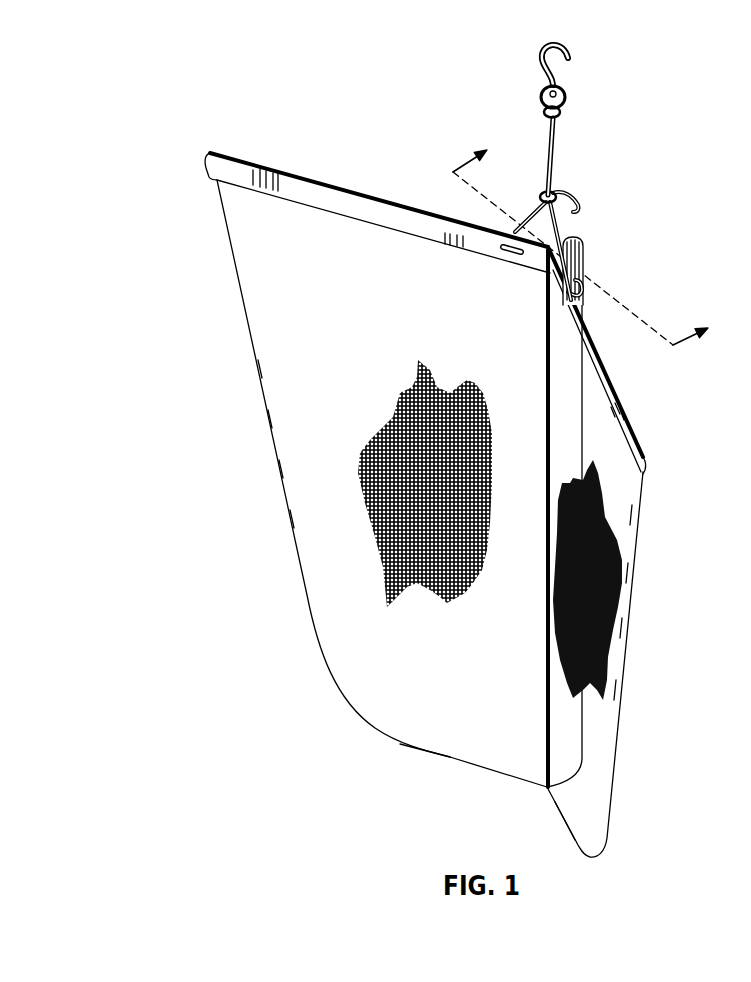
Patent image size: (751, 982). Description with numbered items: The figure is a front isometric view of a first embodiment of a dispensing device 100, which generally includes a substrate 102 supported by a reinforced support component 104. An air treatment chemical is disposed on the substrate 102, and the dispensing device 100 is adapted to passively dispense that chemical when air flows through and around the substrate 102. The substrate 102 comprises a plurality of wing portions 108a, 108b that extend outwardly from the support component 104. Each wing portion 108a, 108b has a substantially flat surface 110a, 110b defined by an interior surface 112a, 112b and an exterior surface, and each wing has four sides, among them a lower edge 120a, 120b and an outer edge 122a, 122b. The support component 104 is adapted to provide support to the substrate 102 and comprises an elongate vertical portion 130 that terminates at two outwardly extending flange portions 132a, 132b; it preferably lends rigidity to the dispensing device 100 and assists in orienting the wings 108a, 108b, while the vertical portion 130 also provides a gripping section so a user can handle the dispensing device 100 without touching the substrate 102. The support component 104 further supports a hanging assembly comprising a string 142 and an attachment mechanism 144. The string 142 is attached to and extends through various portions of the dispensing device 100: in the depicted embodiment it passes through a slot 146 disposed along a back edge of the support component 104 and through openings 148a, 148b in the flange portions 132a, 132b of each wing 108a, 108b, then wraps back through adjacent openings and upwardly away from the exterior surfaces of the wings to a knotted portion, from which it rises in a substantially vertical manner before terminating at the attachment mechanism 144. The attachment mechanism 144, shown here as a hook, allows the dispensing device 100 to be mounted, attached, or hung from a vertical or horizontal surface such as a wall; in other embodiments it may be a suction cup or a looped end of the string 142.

The dispensing device 100 is at (222, 94).
The substrate 102 is at (243, 228).
The support component 104 is at (376, 208).
The wing portion 108a is at (628, 512).
The wing portion 108b is at (272, 350).
The substantially flat surface 110a is at (627, 572).
The substantially flat surface 110b is at (282, 400).
The interior surface 112a is at (620, 626).
The interior surface 112b is at (288, 450).
The lower edge 120a is at (563, 820).
The lower edge 120b is at (428, 752).
The outer edge 122a is at (620, 690).
The outer edge 122b is at (290, 508).
The elongate vertical portion 130 is at (584, 245).
The flange portion 132a is at (633, 435).
The flange portion 132b is at (298, 185).
The string 142 is at (557, 152).
The attachment mechanism 144 is at (571, 57).
The slot 146 is at (598, 272).
The opening 148a is at (565, 305).
The opening 148b is at (500, 250).